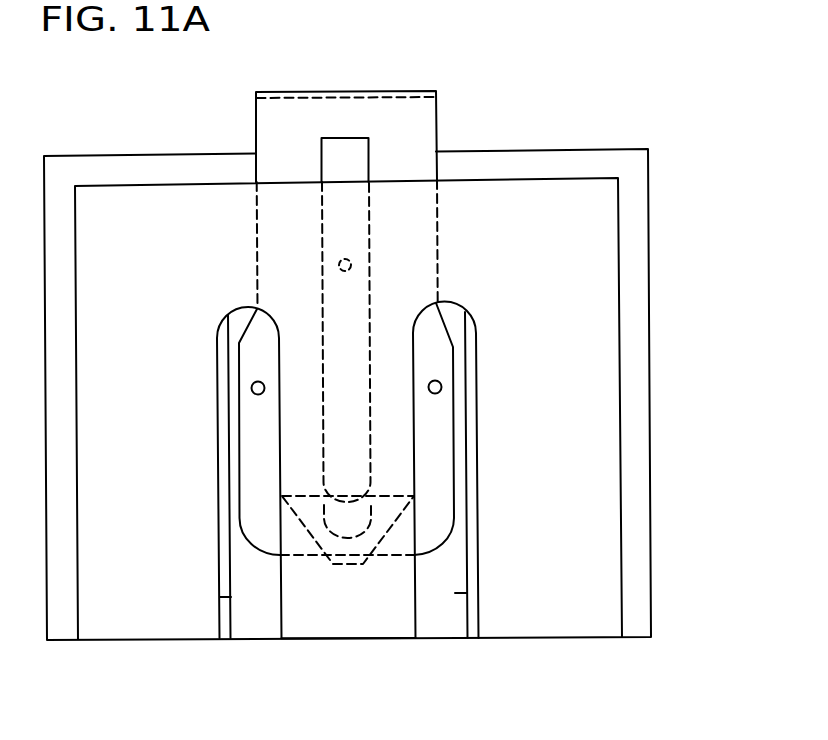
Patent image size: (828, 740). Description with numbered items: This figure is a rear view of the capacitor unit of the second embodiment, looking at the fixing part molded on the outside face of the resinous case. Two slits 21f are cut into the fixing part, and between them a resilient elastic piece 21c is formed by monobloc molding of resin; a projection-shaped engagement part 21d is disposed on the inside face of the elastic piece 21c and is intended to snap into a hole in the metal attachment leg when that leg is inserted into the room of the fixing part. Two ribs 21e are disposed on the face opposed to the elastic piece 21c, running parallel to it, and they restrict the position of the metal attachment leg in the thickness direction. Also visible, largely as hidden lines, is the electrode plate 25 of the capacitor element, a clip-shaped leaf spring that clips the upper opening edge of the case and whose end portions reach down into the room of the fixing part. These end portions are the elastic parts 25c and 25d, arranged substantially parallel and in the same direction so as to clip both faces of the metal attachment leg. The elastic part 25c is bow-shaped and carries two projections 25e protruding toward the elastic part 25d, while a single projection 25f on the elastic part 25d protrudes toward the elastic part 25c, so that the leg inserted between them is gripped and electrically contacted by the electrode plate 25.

The electrode plate 25 is at (375, 92).
The elastic part 25c is at (402, 173).
The elastic part 25d is at (345, 163).
The projection 25e is at (258, 395).
The projection 25f is at (351, 260).
The elastic piece 21c is at (358, 620).
The engagement part 21d is at (306, 520).
The rib 21e is at (230, 583).
The slit 21f is at (267, 622).